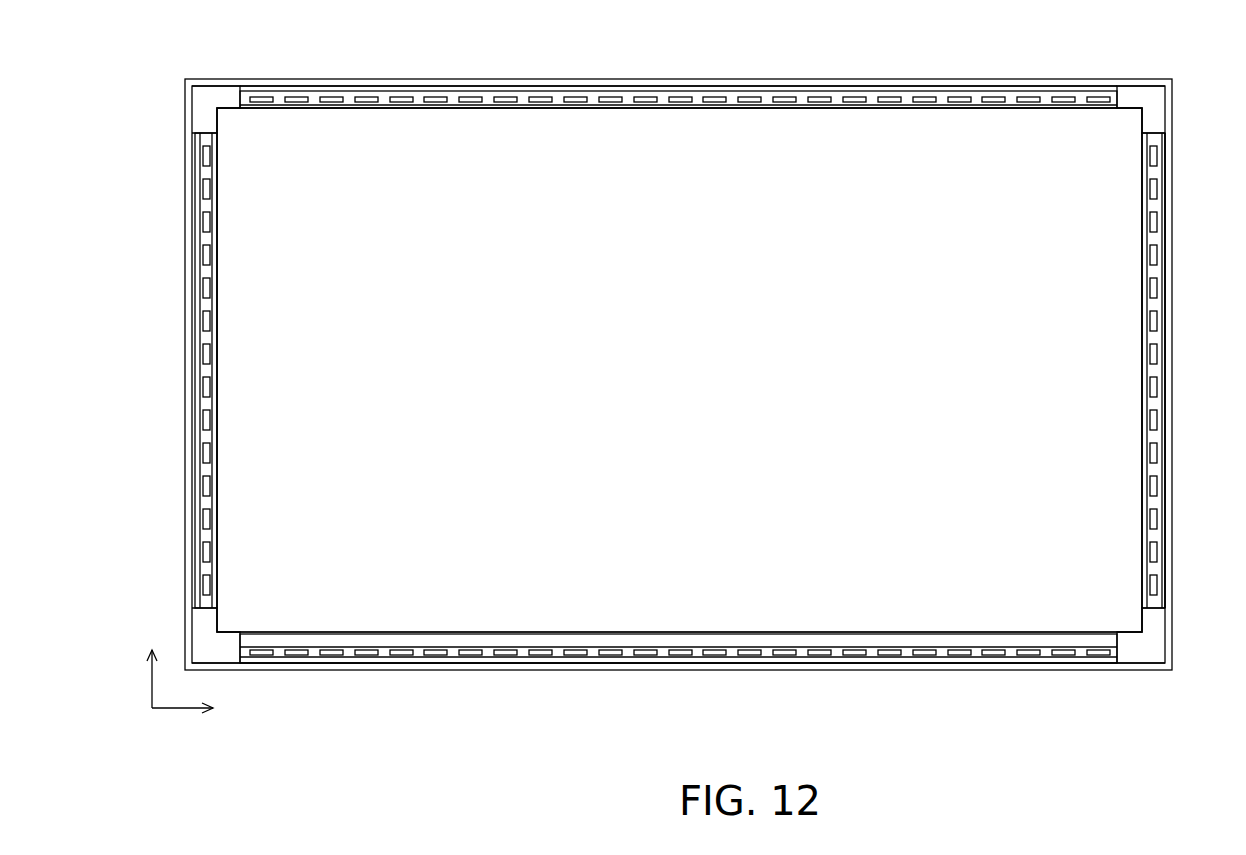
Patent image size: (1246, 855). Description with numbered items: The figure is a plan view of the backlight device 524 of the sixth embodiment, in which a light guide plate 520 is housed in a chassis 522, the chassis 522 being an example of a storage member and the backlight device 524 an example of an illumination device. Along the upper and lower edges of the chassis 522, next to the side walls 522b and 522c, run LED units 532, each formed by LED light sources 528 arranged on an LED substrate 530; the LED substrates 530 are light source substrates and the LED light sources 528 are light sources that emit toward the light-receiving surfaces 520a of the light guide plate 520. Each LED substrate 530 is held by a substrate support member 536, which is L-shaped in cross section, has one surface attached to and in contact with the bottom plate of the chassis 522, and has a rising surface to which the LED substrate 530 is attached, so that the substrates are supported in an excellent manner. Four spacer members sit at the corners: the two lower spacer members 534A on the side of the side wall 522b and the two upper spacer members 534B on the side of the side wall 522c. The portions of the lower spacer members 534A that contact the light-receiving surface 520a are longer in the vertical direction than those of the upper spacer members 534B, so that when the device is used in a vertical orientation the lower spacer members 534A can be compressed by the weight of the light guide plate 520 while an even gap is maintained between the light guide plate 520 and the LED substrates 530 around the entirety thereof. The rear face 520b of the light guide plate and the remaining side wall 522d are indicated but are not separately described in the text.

The light guide plate 520 is at (679, 333).
The light-receiving surface 520a is at (660, 108).
The rear surface of display panel 520b is at (808, 130).
The chassis 522 is at (1170, 203).
The side wall of the chassis 522b is at (778, 666).
The side wall of the chassis 522c is at (988, 83).
The right side of frame 522d is at (1170, 417).
The backlight device 524 is at (530, 72).
The LED light source 528 is at (297, 97).
The LED substrate 530 is at (290, 38).
The LED unit 532 is at (700, 377).
The lower spacer member 534A is at (227, 650).
The upper spacer member 534B is at (213, 106).
The substrate support member 536 is at (429, 95).